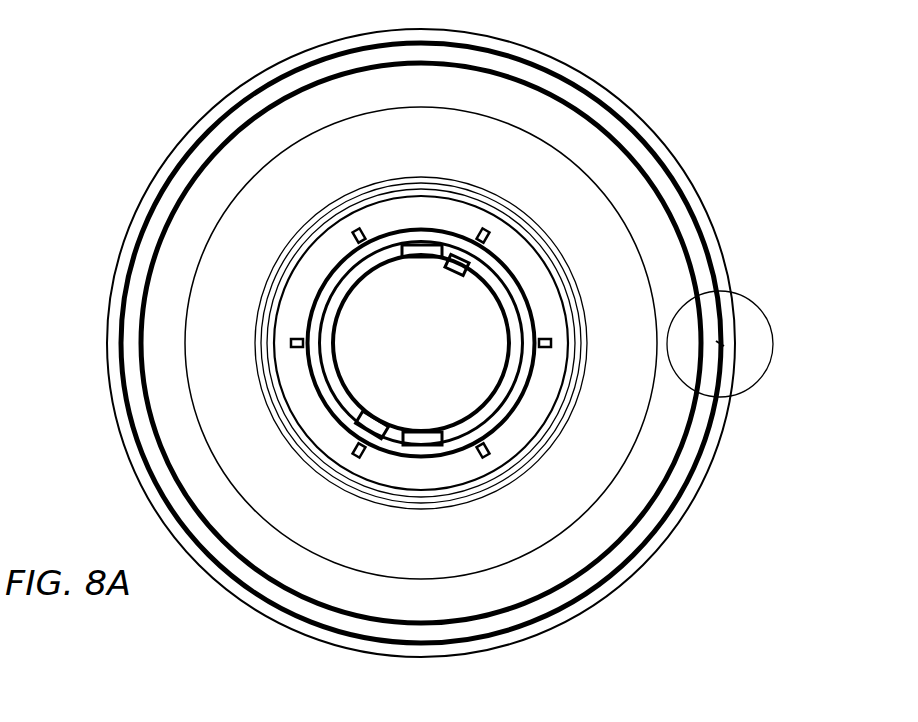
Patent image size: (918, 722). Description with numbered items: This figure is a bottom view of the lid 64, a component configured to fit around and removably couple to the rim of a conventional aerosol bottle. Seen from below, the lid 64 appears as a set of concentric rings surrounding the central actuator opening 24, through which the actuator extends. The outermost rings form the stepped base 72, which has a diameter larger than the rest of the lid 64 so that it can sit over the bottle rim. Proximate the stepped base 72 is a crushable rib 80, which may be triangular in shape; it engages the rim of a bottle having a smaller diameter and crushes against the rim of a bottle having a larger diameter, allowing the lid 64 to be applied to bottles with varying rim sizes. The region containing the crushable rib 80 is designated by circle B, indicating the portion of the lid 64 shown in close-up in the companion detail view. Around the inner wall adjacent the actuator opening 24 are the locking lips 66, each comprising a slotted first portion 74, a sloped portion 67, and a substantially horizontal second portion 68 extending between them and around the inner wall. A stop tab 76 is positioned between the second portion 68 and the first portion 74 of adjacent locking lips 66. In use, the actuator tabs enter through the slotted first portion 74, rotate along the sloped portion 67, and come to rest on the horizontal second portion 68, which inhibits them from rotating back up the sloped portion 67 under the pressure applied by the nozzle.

The actuator opening 24 is at (395, 340).
The lid 64 is at (676, 93).
The locking lip 66 is at (315, 383).
The sloped portion 67 is at (516, 346).
The second portion 68 is at (473, 260).
The stepped base 72 is at (722, 240).
The first portion 74 is at (418, 246).
The stop tab 76 is at (450, 253).
The crushable rib 80 is at (720, 343).
The circle B is at (757, 383).